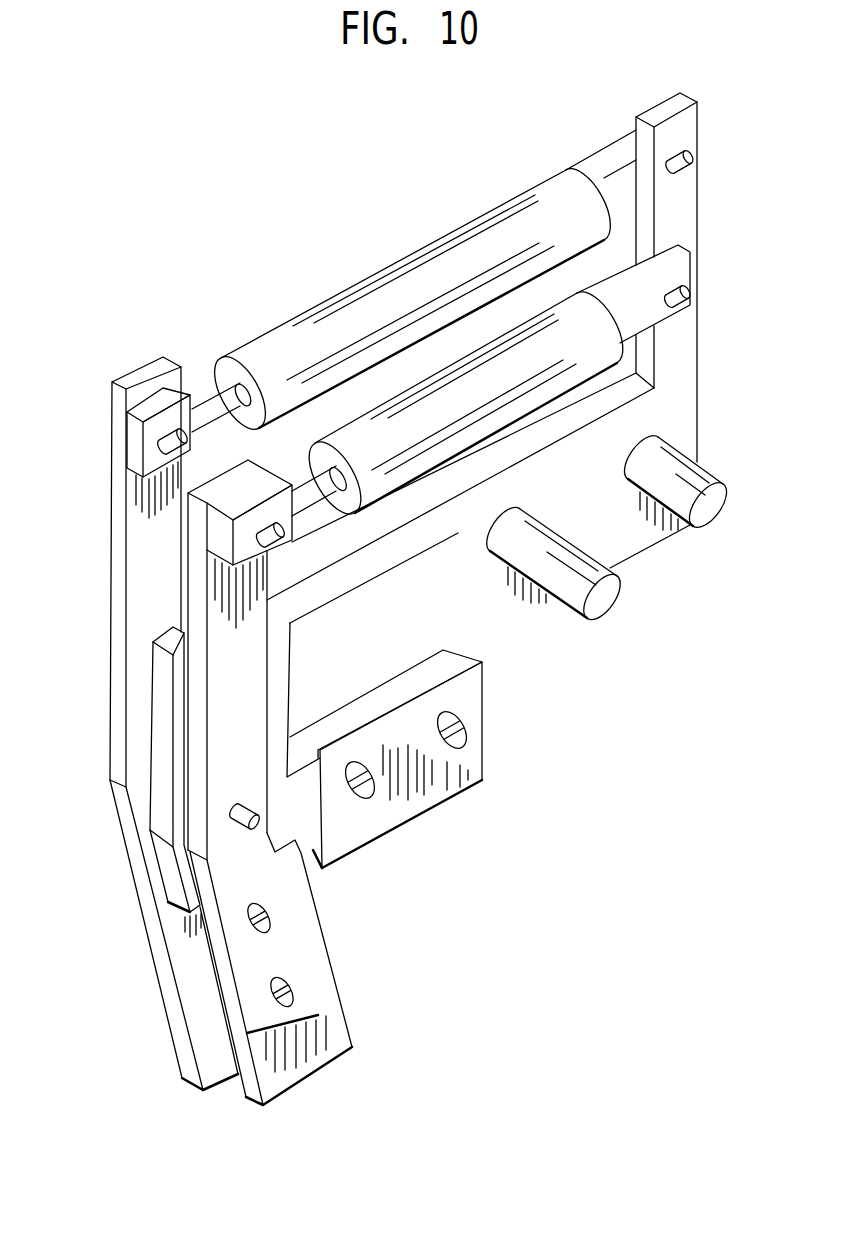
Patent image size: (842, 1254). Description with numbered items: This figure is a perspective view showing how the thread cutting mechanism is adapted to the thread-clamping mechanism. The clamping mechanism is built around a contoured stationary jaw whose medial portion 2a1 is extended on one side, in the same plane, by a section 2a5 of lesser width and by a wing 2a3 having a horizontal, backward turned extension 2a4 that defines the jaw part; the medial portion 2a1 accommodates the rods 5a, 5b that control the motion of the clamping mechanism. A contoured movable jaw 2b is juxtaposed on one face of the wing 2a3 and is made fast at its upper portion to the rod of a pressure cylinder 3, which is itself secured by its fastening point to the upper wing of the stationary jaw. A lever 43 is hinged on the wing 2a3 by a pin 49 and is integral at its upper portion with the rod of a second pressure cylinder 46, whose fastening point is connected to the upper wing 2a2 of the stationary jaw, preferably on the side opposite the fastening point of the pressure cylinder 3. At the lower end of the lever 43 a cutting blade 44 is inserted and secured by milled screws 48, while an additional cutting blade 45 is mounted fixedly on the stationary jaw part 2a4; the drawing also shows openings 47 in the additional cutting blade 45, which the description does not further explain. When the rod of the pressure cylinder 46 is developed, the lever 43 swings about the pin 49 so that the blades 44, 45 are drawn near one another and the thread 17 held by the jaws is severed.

The medial portion 2a1 is at (537, 607).
The upper wing 2a2 is at (667, 110).
The wing 2a3 is at (314, 700).
The horizontal and backward turned extension 2a4 is at (343, 721).
The section of lesser width 2a5 is at (408, 545).
The movable jaw 2b is at (143, 372).
The pressure cylinder 3 is at (373, 283).
The pressure cylinder 46 is at (443, 400).
The rod 5a is at (707, 466).
The rod 5b is at (612, 594).
The thread 17 is at (262, 723).
The lever 43 is at (286, 926).
The cutting blade 44 is at (334, 1062).
The additional cutting blade 45 is at (477, 751).
The mounting holes 47 is at (427, 733).
The milled screws 48 is at (298, 980).
The pin 49 is at (232, 797).